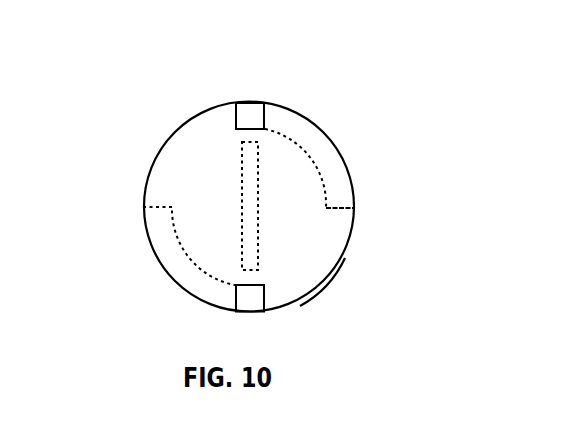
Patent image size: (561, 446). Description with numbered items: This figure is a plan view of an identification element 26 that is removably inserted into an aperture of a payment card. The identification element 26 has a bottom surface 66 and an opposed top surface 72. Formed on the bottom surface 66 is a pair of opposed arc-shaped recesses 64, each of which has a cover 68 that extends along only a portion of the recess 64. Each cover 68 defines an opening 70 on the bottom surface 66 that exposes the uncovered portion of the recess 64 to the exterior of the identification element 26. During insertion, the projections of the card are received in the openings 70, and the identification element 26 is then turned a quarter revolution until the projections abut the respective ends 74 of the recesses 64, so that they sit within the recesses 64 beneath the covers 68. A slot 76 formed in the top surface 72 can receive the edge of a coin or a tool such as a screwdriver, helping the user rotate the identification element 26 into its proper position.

The identification element 26 is at (153, 164).
The arc-shaped recess 64 is at (311, 140).
The bottom surface 66 is at (203, 160).
The cover 68 is at (334, 158).
The opening 70 is at (247, 107).
The top surface 72 is at (338, 266).
The end 74 is at (340, 207).
The slot 76 is at (251, 213).